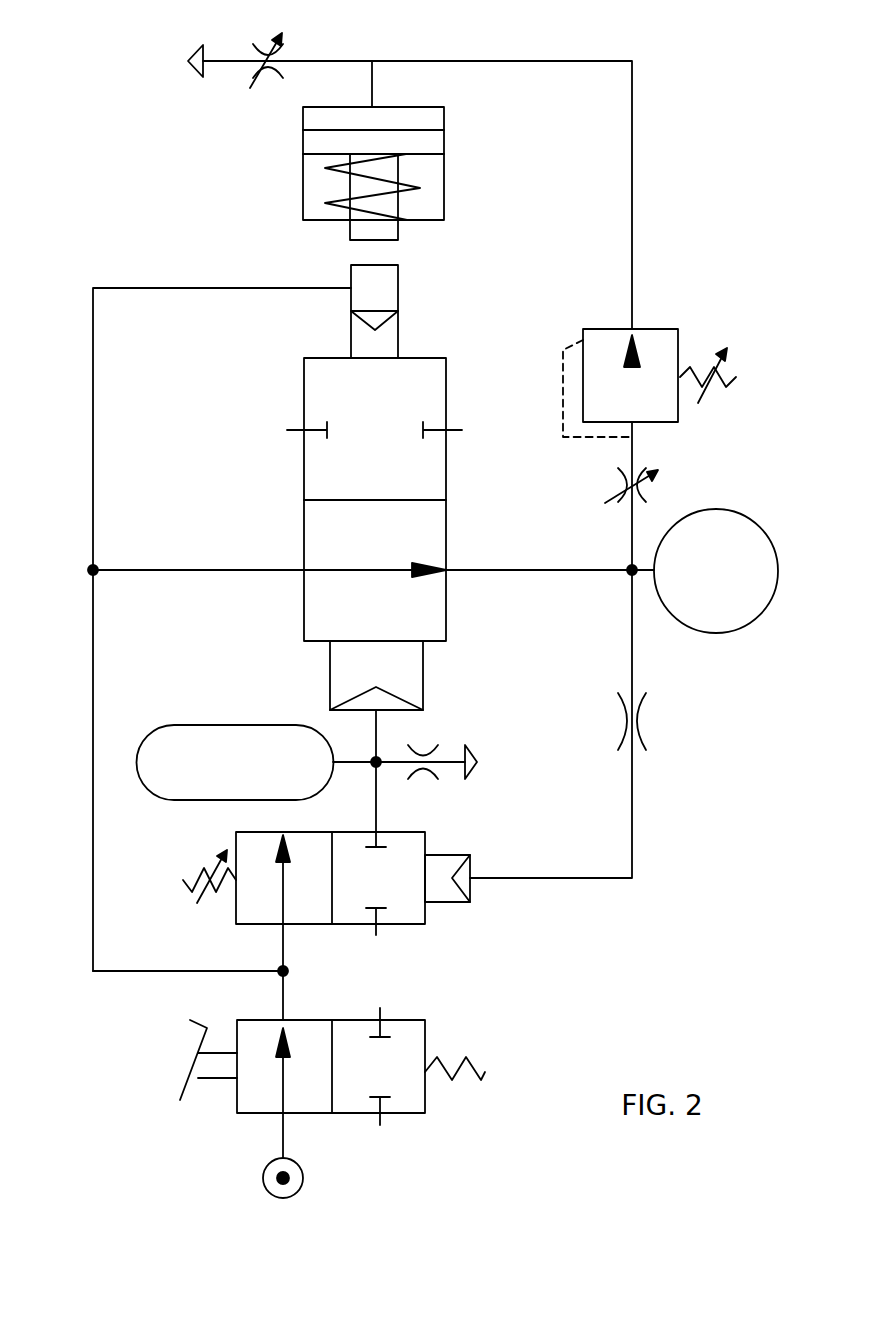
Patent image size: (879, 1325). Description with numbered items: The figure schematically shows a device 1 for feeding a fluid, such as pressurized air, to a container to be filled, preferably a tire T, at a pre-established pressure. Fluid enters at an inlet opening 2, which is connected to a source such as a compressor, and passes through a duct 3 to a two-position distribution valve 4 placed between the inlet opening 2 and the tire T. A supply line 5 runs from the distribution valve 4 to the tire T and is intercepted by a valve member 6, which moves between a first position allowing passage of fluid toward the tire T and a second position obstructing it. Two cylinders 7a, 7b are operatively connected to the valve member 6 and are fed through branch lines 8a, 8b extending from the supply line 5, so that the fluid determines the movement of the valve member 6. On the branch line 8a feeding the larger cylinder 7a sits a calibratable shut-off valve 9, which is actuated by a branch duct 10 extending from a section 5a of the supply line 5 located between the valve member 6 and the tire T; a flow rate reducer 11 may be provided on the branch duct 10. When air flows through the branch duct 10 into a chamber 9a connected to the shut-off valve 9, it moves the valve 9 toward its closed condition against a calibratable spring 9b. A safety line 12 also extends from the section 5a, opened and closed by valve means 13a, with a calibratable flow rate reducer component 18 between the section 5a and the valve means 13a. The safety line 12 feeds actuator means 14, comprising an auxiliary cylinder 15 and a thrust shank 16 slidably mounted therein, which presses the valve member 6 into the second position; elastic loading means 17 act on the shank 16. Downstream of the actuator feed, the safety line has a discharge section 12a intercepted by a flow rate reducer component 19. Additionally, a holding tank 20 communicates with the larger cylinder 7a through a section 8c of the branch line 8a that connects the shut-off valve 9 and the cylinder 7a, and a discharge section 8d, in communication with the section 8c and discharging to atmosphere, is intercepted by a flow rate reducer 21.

The device 1 is at (158, 220).
The inlet opening 2 is at (307, 1178).
The duct 3 is at (280, 1138).
The distribution valve 4 is at (425, 1022).
The supply line 5 is at (130, 972).
The section of the supply line 5a is at (525, 570).
The valve member 6 is at (304, 400).
The larger cylinder 7a is at (330, 668).
The compartment or cylinder 7b is at (400, 338).
The branch line 8a is at (285, 943).
The branch line 8b is at (93, 422).
The section of the branch line 8c is at (375, 785).
The discharge section 8d is at (393, 767).
The shut-off valve 9 is at (425, 925).
The chamber 9a is at (458, 855).
The spring 9b is at (190, 880).
The branch duct 10 is at (634, 830).
The flow rate reducer 11 is at (648, 717).
The safety line 12 is at (634, 150).
The discharge section 12a is at (232, 60).
The opening-closing valve means 13a is at (650, 328).
The actuator means 14 is at (303, 172).
The auxiliary cylinder 15 is at (428, 136).
The thrust means or shank 16 is at (398, 228).
The elastic loading means 17 is at (330, 210).
The calibratable flow rate reducer component 18 is at (643, 495).
The flow rate reducer component 19 is at (268, 78).
The holding tank 20 is at (218, 725).
The flow rate reducer 21 is at (427, 753).
The tire T is at (760, 615).